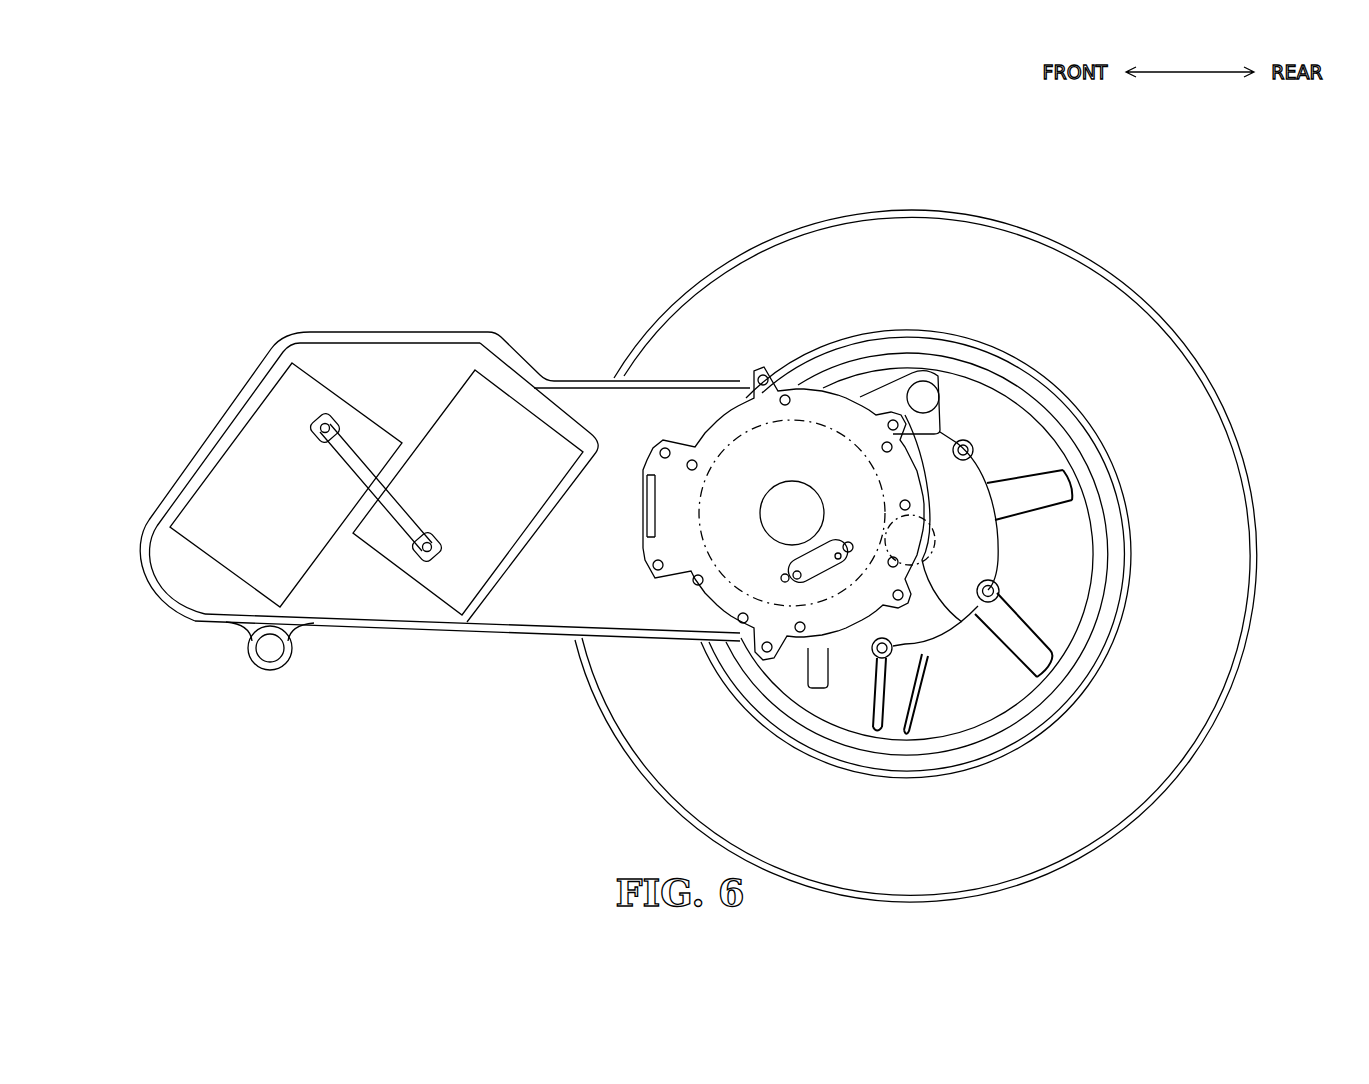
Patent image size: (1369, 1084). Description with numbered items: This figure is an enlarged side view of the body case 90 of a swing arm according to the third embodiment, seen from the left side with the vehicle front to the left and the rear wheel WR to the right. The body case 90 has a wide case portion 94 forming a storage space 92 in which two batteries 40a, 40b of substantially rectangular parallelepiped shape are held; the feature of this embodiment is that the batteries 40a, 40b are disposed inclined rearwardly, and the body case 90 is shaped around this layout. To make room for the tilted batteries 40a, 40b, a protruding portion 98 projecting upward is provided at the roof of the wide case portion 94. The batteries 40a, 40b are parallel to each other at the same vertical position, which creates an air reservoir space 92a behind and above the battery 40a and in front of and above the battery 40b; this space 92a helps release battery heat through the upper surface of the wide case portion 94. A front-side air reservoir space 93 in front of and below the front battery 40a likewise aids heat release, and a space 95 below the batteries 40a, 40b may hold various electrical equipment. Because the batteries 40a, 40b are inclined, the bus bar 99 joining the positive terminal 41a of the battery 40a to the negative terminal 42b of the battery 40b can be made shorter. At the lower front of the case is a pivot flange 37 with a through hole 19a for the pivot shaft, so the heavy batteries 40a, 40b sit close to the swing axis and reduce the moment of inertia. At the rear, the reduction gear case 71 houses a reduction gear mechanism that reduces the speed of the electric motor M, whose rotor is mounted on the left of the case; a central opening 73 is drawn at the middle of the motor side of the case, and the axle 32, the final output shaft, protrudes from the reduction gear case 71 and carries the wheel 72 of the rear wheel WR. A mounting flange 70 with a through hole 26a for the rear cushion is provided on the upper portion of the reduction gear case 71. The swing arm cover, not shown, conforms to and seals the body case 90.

The body case 90 is at (498, 238).
The storage space 92 is at (262, 384).
The air reservoir space 92a is at (384, 370).
The front-side air reservoir space 93 is at (168, 575).
The wide case portion 94 is at (464, 331).
The space 95 is at (340, 584).
The protruding portion 98 is at (322, 333).
The bus bar 99 is at (348, 457).
The battery 40a is at (213, 495).
The battery 40b is at (452, 588).
The positive terminal 41a is at (312, 428).
The negative terminal 42b is at (421, 560).
The through hole 19a is at (270, 650).
The pivot flange 37 is at (243, 632).
The electric motor M is at (752, 432).
The output shaft hole 73 is at (790, 506).
The mounting flange 70 is at (879, 392).
The through hole 26a is at (929, 391).
The reduction gear case 71 is at (987, 550).
The wheel 72 is at (1055, 658).
The axle 32 is at (930, 565).
The rear wheel WR is at (1085, 834).